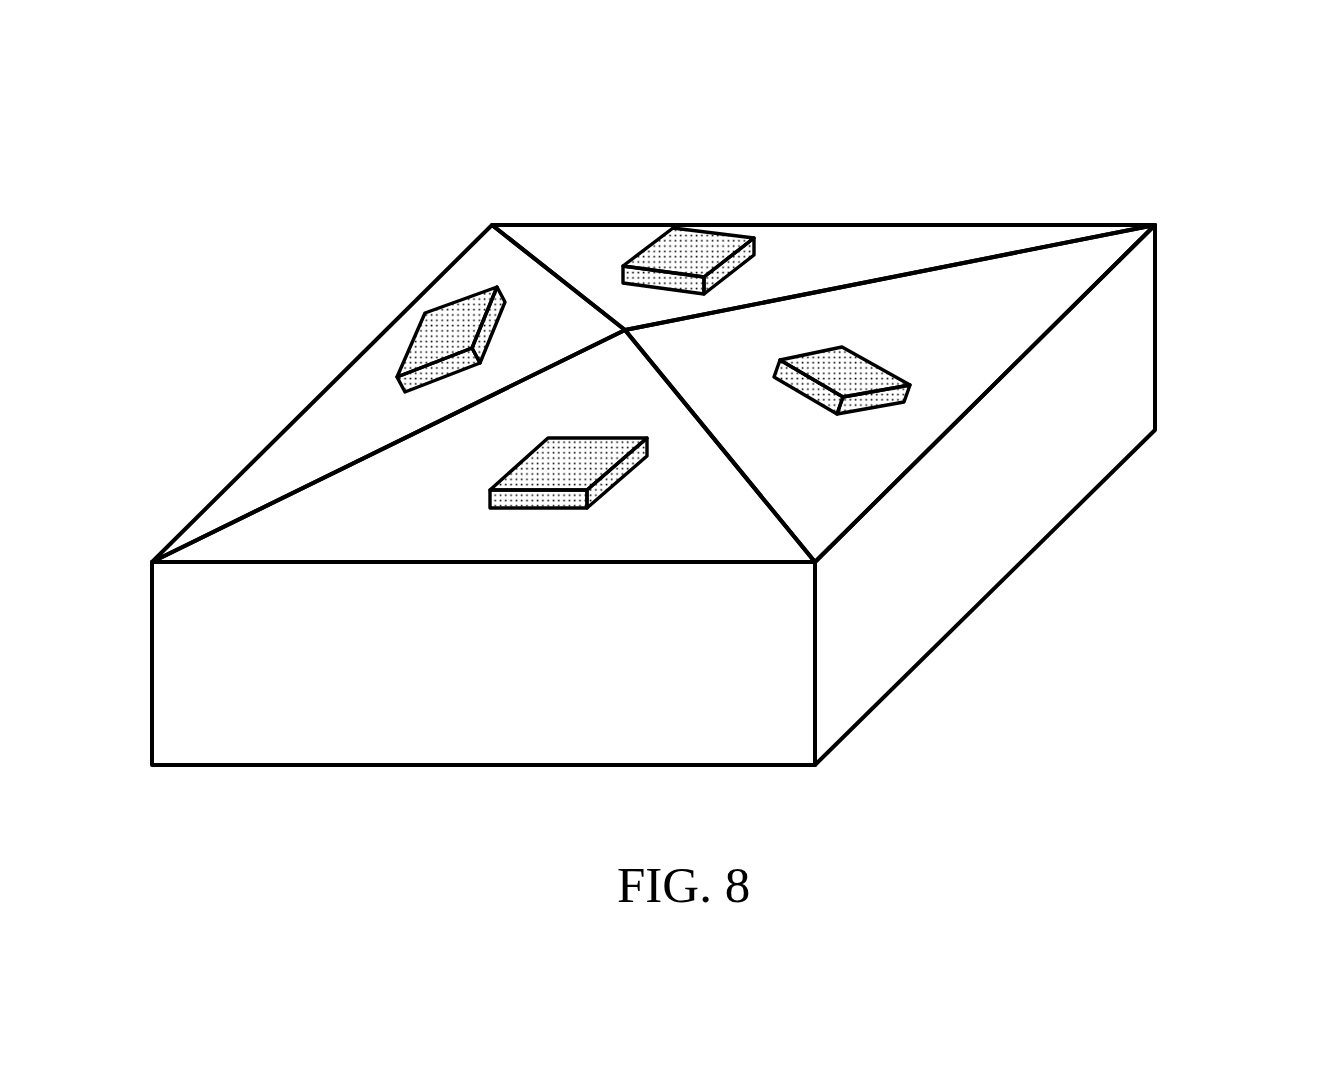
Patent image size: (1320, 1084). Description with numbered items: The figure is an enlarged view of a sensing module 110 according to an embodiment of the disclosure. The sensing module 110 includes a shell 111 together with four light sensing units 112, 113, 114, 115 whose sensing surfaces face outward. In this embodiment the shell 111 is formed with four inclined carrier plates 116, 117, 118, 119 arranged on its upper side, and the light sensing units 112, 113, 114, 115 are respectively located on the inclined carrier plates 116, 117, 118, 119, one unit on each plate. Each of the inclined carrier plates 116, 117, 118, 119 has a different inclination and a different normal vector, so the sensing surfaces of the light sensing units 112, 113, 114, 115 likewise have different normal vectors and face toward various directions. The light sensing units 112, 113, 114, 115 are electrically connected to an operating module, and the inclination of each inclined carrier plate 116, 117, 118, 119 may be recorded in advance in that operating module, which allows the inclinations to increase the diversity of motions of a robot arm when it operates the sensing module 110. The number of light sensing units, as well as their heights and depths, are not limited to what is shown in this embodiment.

The sensing module 110 is at (382, 124).
The shell 111 is at (1157, 326).
The light sensing unit 112 is at (698, 243).
The light sensing unit 113 is at (432, 338).
The light sensing unit 114 is at (565, 475).
The light sensing unit 115 is at (910, 388).
The inclined carrier plate 116 is at (834, 257).
The inclined carrier plate 117 is at (936, 334).
The inclined carrier plate 118 is at (407, 508).
The inclined carrier plate 119 is at (322, 442).